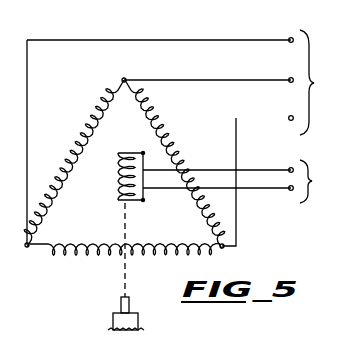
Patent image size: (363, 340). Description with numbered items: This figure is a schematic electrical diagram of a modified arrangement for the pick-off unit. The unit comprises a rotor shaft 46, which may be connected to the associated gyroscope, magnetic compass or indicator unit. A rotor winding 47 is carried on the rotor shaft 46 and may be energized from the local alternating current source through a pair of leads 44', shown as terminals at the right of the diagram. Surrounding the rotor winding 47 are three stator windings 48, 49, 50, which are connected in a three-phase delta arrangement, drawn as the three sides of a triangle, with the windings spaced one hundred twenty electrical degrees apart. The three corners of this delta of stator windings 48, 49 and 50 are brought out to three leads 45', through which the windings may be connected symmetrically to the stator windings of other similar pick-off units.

The leads 44' is at (315, 181).
The leads 45' is at (316, 82).
The rotor shaft 46 is at (130, 232).
The rotor winding 47 is at (113, 184).
The stator winding 48 is at (69, 157).
The stator winding 49 is at (173, 144).
The stator winding 50 is at (89, 256).